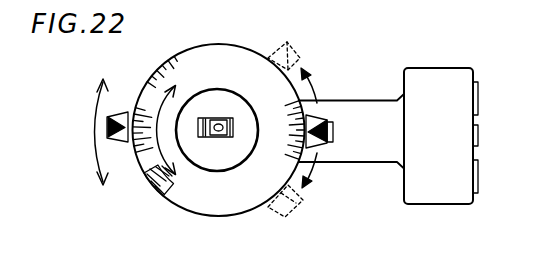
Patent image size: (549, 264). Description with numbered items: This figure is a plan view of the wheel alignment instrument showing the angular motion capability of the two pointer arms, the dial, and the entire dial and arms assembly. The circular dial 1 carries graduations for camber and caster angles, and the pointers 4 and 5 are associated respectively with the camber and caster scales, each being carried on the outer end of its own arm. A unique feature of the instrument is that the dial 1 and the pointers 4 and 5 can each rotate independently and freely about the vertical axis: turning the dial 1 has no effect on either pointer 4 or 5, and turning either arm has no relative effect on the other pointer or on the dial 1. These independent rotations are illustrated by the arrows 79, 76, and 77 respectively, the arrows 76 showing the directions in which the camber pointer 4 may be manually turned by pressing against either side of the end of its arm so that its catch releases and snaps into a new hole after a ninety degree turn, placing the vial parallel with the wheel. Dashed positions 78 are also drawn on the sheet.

The circular dial 1 is at (218, 207).
The pointer 4 is at (123, 142).
The pointer 5 is at (328, 118).
The arrows 76 is at (82, 132).
The arrows 77 is at (316, 88).
The detent positions 78 is at (277, 50).
The arrows 79 is at (155, 183).